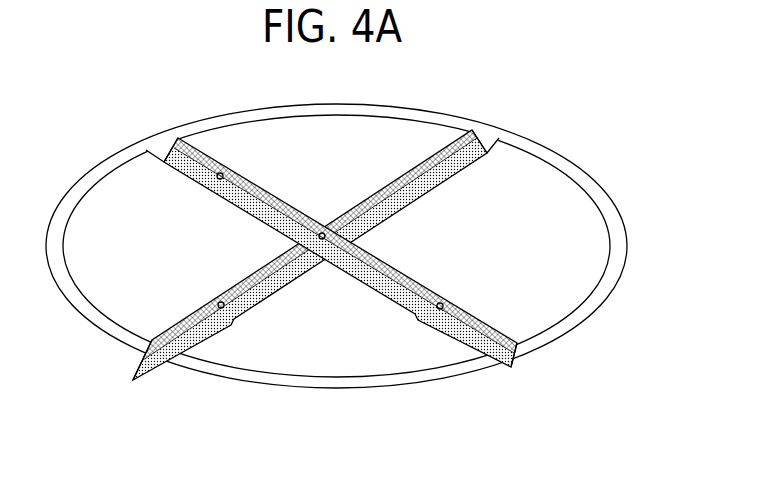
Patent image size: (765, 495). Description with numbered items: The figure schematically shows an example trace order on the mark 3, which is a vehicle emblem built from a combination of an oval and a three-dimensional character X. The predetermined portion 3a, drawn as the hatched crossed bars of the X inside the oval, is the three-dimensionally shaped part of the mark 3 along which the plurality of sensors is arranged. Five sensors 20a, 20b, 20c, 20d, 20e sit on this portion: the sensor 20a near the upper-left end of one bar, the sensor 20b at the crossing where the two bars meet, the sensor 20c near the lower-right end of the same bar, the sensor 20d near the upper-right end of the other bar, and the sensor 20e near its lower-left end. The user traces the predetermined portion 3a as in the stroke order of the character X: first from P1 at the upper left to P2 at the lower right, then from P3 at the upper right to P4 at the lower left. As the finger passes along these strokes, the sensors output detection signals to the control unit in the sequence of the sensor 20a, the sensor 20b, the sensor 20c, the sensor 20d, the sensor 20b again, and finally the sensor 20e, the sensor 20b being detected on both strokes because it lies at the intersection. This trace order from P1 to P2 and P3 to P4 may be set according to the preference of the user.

The mark 3 is at (110, 135).
The predetermined portion 3a is at (176, 142).
The sensor 20a is at (250, 157).
The sensor 20b is at (324, 231).
The sensor 20c is at (444, 301).
The sensor 20d is at (407, 171).
The sensor 20e is at (229, 310).
The start point of first stroke P1 is at (159, 165).
The end point of first stroke P2 is at (527, 371).
The start point of second stroke P3 is at (491, 155).
The end point of second stroke P4 is at (128, 374).